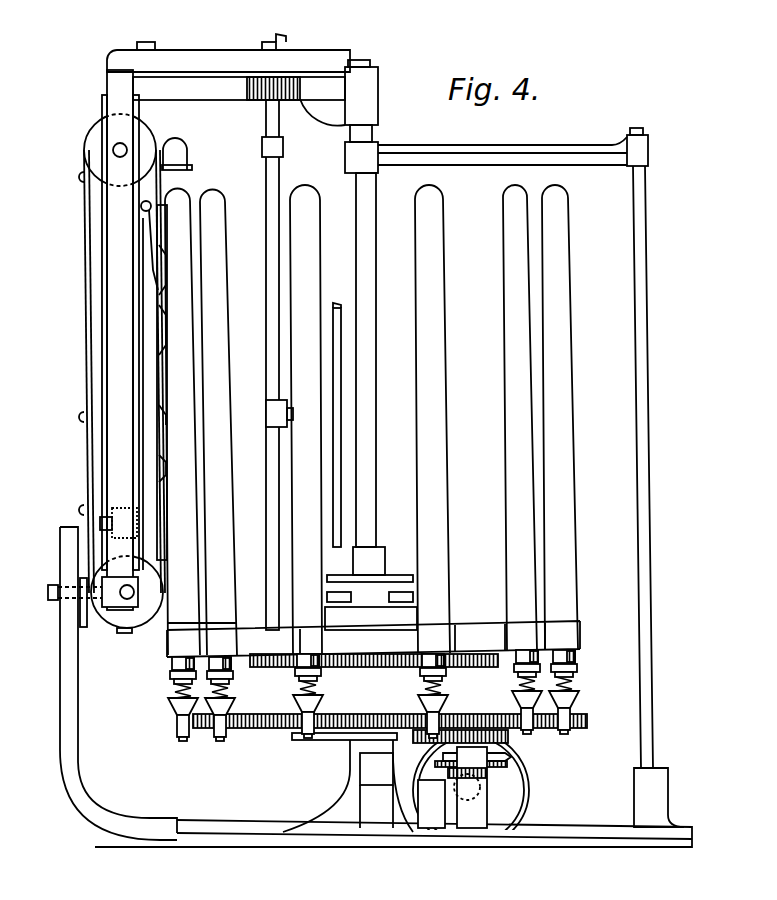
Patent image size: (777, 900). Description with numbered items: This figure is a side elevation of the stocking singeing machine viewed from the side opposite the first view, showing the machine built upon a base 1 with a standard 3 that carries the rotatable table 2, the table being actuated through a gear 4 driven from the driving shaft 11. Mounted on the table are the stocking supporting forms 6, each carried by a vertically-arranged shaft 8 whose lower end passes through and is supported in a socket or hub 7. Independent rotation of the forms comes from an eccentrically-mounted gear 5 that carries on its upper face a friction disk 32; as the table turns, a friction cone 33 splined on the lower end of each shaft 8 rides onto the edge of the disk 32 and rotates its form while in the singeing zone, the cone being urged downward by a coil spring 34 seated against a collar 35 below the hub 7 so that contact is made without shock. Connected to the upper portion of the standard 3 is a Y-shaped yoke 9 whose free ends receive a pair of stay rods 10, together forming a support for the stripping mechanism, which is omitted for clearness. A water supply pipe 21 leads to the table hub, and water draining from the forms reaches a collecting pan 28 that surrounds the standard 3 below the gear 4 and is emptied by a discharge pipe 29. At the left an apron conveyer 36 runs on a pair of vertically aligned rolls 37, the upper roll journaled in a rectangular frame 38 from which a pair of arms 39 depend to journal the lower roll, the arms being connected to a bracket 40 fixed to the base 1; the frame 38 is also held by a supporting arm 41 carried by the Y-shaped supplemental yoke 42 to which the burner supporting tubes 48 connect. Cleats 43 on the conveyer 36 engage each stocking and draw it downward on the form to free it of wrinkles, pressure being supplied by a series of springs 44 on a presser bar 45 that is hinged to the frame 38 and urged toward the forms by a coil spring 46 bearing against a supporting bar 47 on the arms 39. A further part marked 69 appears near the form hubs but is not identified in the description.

The base 1 is at (424, 836).
The rotatable table 2 is at (258, 645).
The standard 3 is at (367, 508).
The gear 4 is at (277, 672).
The eccentrically-mounted gear 5 is at (266, 728).
The supporting forms 6 is at (186, 290).
The hub 7 is at (170, 674).
The shafts 8 is at (218, 742).
The yoke 9 is at (505, 154).
The stay rods 10 is at (649, 466).
The driving shaft 11 is at (490, 783).
The water supply pipe 21 is at (341, 347).
The collecting pan 28 is at (338, 664).
The discharge pipe 29 is at (345, 776).
The friction disk 32 is at (290, 740).
The friction cones 33 is at (182, 703).
The coil springs 34 is at (175, 689).
The collars 35 is at (574, 674).
The apron conveyer 36 is at (86, 383).
The rolls 37 is at (93, 154).
The frame 38 is at (102, 108).
The arms 39 is at (113, 333).
The bracket 40 is at (67, 661).
The supporting arm 41 is at (140, 62).
The supplemental yoke 42 is at (235, 96).
The cleats 43 is at (80, 180).
The springs 44 is at (160, 400).
The presser bar 45 is at (160, 458).
The coil spring 46 is at (125, 512).
The supporting bar 47 is at (100, 517).
The supporting tube 48 is at (140, 116).
The nut 69 is at (172, 662).